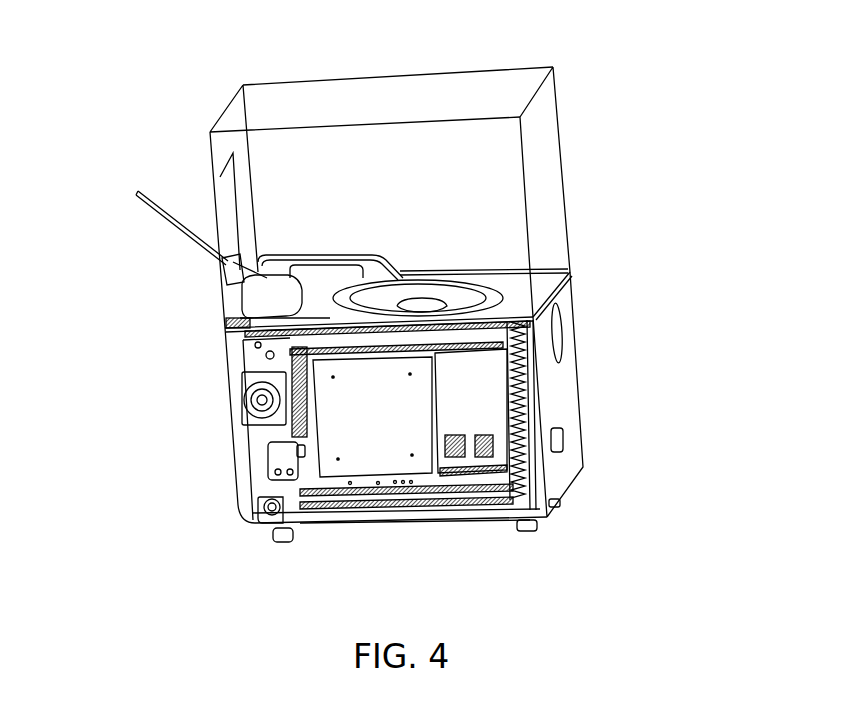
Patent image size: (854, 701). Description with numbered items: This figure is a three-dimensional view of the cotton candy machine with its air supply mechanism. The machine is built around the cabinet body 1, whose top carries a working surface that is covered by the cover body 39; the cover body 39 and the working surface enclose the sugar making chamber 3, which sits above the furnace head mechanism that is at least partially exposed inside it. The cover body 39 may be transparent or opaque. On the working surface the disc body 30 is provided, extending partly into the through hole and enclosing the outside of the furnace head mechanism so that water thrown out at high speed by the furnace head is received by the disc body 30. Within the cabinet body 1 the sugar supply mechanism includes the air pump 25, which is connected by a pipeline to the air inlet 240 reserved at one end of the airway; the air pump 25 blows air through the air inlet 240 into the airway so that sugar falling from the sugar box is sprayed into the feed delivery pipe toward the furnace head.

The sugar making chamber 3 is at (398, 183).
The cover body 39 is at (548, 175).
The disc body 30 is at (457, 290).
The cabinet body 1 is at (573, 393).
The air pump 25 is at (240, 388).
The air inlet 240 is at (243, 503).